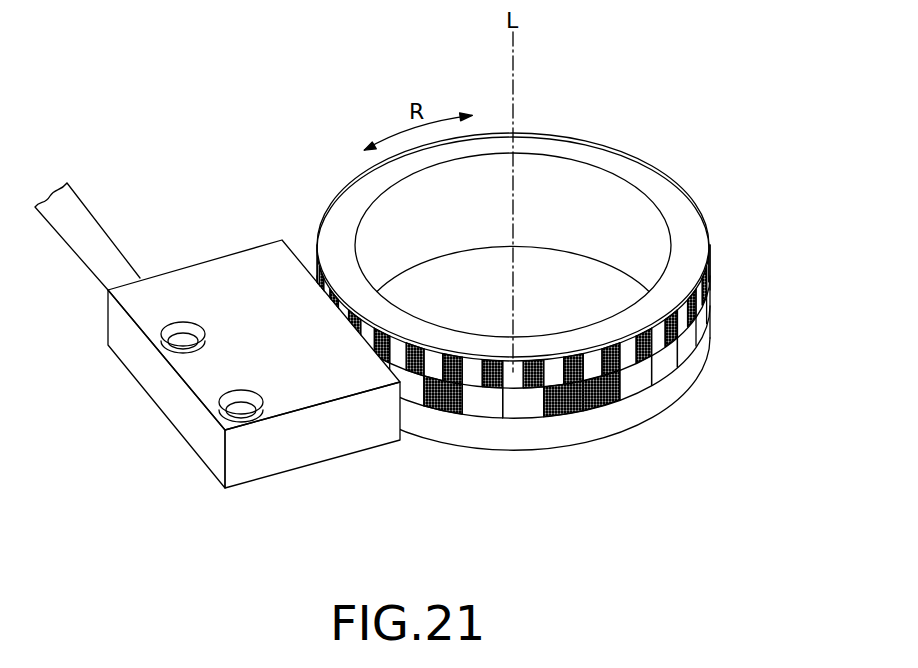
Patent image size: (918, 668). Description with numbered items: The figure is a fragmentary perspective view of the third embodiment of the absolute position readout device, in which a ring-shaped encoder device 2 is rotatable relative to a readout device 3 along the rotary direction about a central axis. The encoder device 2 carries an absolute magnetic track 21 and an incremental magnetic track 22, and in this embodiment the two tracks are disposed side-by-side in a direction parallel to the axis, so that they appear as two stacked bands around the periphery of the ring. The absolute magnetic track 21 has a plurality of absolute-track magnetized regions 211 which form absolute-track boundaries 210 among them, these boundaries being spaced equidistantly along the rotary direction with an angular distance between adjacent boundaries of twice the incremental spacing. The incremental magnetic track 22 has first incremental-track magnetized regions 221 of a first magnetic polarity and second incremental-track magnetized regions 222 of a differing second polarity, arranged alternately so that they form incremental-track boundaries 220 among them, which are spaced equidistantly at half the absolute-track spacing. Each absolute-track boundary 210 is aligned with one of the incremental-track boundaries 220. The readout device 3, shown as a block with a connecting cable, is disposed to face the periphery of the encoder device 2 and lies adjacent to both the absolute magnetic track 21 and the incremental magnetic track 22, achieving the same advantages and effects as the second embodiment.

The encoder device 2 is at (556, 297).
The absolute magnetic track 21 is at (722, 296).
The incremental magnetic track 22 is at (716, 254).
The incremental-track boundaries 220 is at (566, 357).
The first incremental-track magnetized regions 221 is at (655, 345).
The second incremental-track magnetized regions 222 is at (677, 348).
The absolute-track boundaries 210 is at (538, 403).
The absolute-track magnetized regions 211 is at (441, 403).
The readout device 3 is at (225, 236).